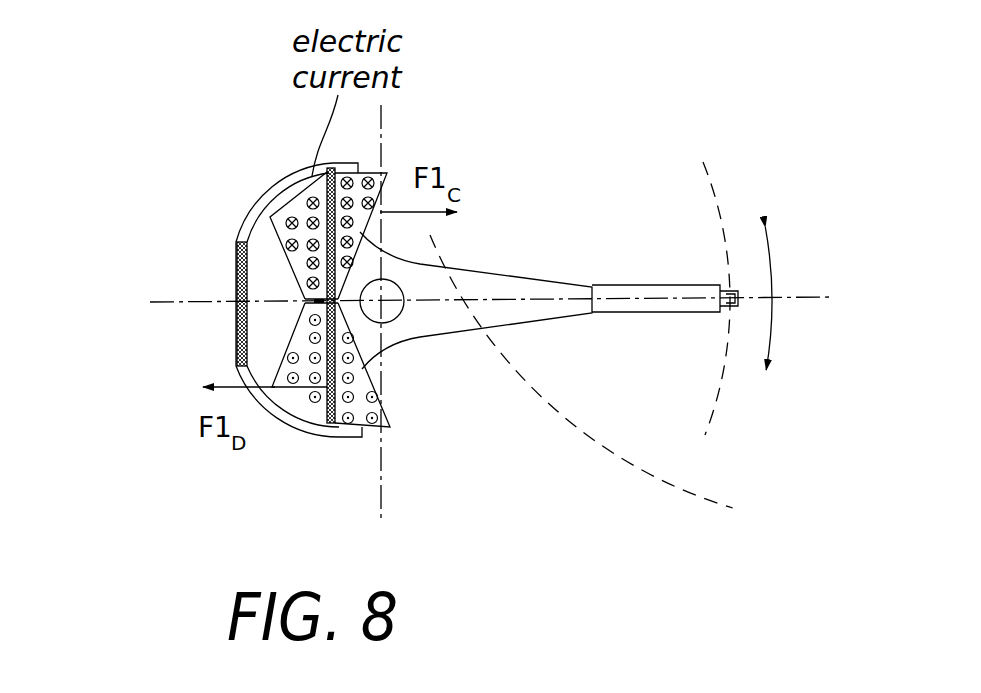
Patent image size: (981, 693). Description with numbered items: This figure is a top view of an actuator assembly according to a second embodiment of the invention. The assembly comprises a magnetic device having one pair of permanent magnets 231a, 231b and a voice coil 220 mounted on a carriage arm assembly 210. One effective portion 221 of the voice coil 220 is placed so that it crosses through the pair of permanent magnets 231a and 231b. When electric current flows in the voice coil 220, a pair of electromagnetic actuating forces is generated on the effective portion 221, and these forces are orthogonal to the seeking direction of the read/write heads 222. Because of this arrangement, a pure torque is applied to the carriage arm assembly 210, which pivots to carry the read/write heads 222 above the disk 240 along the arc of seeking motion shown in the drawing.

The carriage arm assembly 210 is at (506, 258).
The voice coil 220 is at (266, 175).
The effective portion 221 is at (240, 258).
The read/write heads 222 is at (740, 297).
The permanent magnet 231a is at (290, 264).
The permanent magnet 231b is at (240, 337).
The disk 240 is at (632, 418).